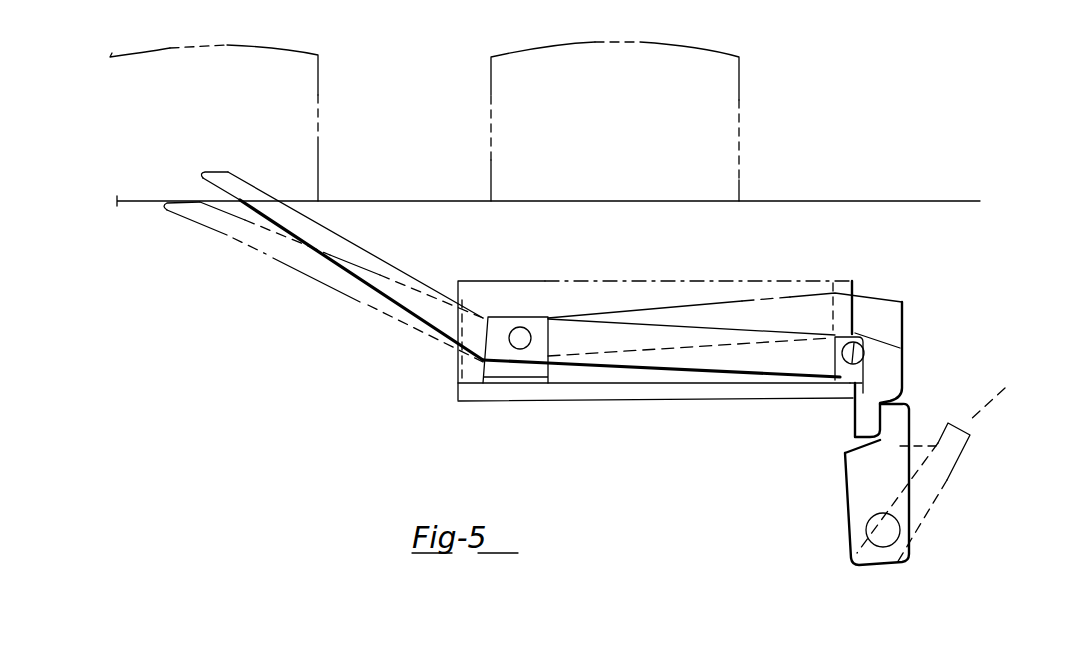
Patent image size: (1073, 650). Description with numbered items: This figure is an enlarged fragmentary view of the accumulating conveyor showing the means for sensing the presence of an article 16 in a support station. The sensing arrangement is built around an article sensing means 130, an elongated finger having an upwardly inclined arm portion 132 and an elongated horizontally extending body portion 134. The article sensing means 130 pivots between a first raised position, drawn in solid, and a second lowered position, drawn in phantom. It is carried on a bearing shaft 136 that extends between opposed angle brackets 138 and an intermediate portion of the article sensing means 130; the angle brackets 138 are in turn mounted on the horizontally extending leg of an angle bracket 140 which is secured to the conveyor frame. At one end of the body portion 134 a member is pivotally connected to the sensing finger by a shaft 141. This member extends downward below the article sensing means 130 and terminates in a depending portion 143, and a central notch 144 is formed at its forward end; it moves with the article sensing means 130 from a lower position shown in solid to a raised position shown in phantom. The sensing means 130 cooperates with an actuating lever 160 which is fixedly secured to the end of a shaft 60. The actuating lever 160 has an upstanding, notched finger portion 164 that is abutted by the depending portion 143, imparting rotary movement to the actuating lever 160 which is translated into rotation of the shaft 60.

The article 16 is at (225, 48).
The shaft 60 is at (895, 532).
The article sensing means 130 is at (423, 231).
The arm portion 132 is at (182, 310).
The body portion 134 is at (617, 335).
The bearing shaft 136 is at (510, 318).
The angle brackets 138 is at (548, 372).
The angle bracket 140 is at (456, 370).
The shaft 141 is at (866, 335).
The depending portion 143 is at (904, 364).
The central notch 144 is at (850, 384).
The actuating lever 160 is at (848, 500).
The finger portion 164 is at (905, 404).